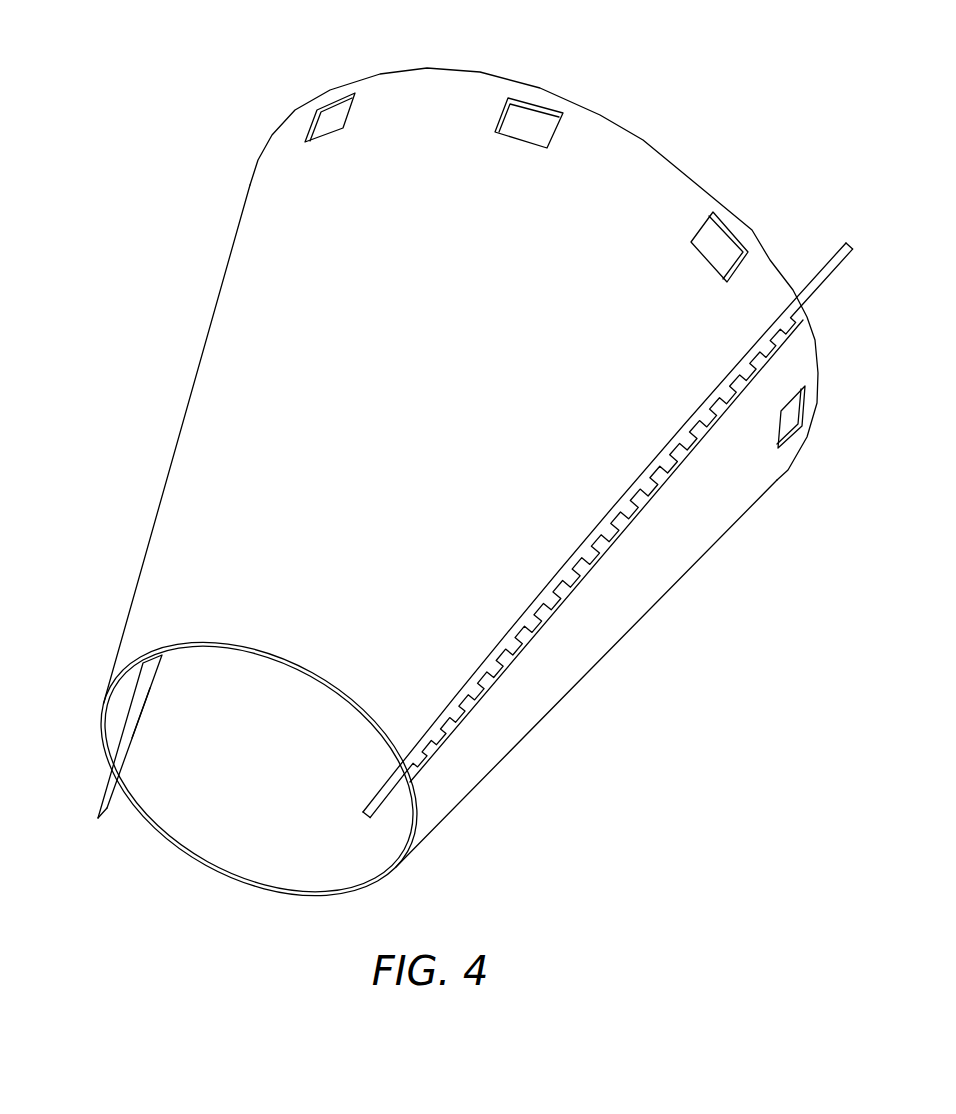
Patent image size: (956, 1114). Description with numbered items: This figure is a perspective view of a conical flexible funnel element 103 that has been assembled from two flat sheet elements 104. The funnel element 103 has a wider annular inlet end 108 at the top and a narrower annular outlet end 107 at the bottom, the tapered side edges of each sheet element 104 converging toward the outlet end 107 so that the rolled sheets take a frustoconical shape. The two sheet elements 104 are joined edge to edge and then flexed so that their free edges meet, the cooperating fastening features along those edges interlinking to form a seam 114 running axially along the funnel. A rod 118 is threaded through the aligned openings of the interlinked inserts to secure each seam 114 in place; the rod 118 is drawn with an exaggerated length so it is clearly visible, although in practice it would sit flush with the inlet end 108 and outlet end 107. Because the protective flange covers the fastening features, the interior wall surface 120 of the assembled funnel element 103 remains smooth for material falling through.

The funnel element 103 is at (195, 245).
The sheet element 104 is at (642, 155).
The annular outlet end 107 is at (205, 873).
The annular inlet end 108 is at (492, 63).
The seam 114 is at (674, 487).
The rod 118 is at (100, 807).
The interior wall surface 120 is at (143, 737).